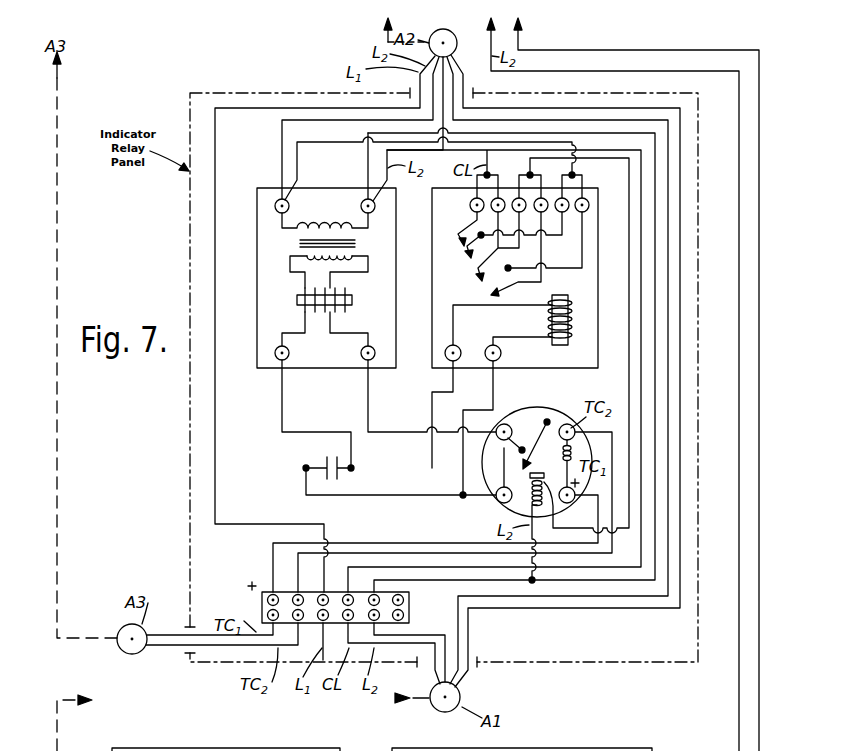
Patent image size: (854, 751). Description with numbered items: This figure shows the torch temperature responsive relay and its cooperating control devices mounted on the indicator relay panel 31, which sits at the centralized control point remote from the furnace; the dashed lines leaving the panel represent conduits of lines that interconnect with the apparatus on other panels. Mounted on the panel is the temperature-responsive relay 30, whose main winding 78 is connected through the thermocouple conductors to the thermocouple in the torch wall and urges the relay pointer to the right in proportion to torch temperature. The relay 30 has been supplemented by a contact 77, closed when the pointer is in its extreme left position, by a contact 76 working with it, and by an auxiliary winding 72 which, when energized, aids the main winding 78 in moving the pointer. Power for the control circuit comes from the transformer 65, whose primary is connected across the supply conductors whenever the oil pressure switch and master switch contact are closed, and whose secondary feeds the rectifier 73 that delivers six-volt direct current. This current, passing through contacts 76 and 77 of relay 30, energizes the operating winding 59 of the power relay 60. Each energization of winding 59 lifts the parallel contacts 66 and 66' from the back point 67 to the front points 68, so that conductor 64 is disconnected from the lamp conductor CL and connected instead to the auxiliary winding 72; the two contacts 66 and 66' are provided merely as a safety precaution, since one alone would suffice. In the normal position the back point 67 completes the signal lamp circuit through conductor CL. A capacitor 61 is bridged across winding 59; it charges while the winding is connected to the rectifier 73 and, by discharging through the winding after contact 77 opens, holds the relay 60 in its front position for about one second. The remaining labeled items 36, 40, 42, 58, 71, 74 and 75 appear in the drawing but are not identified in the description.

The temperature-responsive relay 30 is at (558, 412).
The indicator relay panel 31 is at (700, 458).
The power line 36 is at (528, 47).
The connector wire 40 is at (467, 75).
The connector wire 42 is at (473, 84).
The transformer 58 is at (257, 272).
The operating winding 59 is at (549, 316).
The power relay 60 is at (598, 286).
The capacitor 61 is at (328, 456).
The conductor 64 is at (435, 88).
The transformer 65 is at (356, 243).
The contact 66 is at (457, 255).
The parallel contact 66' is at (470, 253).
The back point 67 is at (461, 243).
The front points 68 is at (489, 295).
The wire 71 is at (530, 170).
The auxiliary winding 72 is at (529, 496).
The rectifier 73 is at (350, 306).
The lead 74 is at (281, 396).
The lead 75 is at (367, 396).
The contact 76 is at (493, 384).
The contact 77 is at (562, 448).
The main winding 78 is at (539, 447).